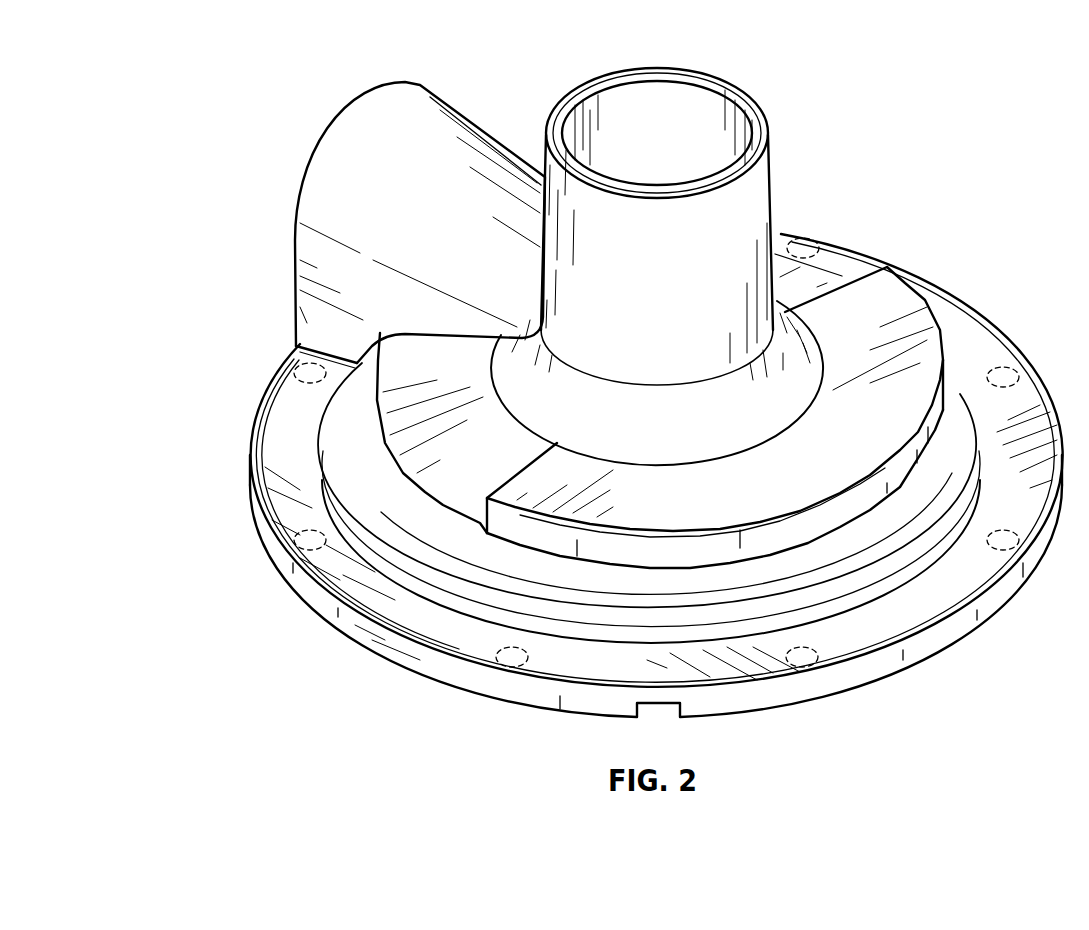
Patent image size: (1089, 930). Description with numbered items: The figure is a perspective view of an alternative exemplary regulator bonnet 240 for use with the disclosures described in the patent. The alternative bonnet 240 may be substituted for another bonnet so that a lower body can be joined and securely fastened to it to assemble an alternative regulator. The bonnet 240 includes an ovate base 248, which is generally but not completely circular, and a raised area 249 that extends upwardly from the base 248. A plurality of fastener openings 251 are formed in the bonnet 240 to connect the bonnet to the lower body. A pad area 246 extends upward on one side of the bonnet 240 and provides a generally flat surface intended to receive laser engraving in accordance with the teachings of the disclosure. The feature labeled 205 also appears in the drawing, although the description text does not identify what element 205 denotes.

The alternative bonnet 240 is at (980, 90).
The tab 205 is at (287, 173).
The pad area 246 is at (903, 298).
The base 248 is at (370, 647).
The raised area 249 is at (350, 437).
The fastener openings 251 is at (1012, 543).